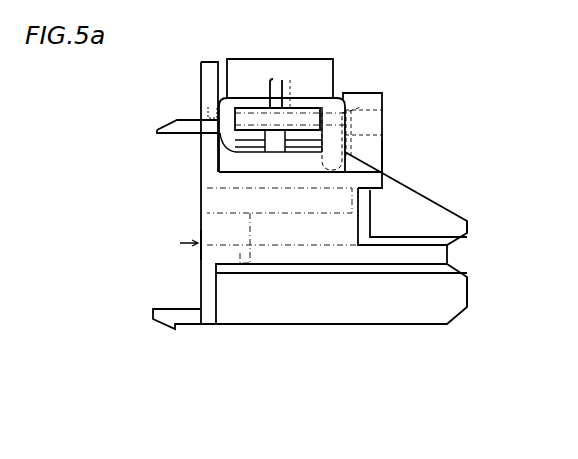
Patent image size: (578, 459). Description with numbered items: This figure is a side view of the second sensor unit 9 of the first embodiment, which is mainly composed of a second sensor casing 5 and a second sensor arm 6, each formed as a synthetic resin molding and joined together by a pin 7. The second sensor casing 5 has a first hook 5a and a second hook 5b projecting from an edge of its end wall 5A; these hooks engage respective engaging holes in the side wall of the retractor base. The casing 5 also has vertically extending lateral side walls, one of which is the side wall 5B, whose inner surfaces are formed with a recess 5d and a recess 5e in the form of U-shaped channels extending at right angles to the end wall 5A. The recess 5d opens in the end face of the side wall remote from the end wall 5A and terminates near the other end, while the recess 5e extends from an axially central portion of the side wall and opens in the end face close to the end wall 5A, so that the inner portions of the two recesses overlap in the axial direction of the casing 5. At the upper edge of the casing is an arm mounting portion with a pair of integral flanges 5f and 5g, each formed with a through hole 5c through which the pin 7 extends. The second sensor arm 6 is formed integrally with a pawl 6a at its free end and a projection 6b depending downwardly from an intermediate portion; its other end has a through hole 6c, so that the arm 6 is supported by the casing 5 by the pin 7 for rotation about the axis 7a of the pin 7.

The second sensor casing 5 is at (479, 200).
The first hook 5a is at (164, 136).
The second hook 5b is at (158, 334).
The through hole 5c is at (200, 94).
The recess 5d is at (385, 368).
The recess 5e is at (240, 368).
The flange 5f is at (372, 85).
The flange 5g is at (211, 107).
The end wall 5A is at (178, 279).
The lateral side wall 5B is at (305, 312).
The second sensor arm 6 is at (345, 62).
The pawl 6a is at (247, 113).
The projection 6b is at (345, 152).
The through hole 6c is at (297, 113).
The pin 7 is at (384, 140).
The axis 7a is at (396, 131).
The second sensor unit 9 is at (165, 251).